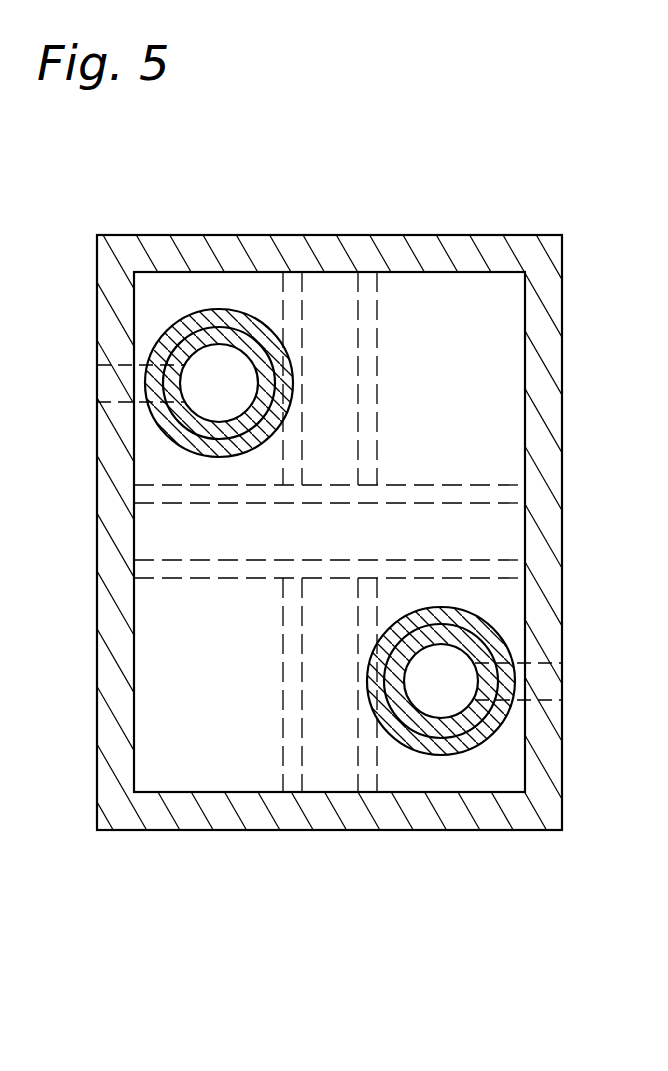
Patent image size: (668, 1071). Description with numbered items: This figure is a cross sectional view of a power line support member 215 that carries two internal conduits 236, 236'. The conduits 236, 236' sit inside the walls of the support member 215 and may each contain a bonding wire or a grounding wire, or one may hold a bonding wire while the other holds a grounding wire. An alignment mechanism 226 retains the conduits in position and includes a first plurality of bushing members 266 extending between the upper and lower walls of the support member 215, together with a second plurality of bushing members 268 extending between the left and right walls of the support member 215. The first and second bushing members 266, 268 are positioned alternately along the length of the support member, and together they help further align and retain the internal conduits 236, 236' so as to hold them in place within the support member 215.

The support member 215 is at (237, 860).
The alignment mechanism 226 is at (467, 470).
The internal conduit 236 is at (502, 667).
The internal conduit 236' is at (160, 329).
The first plurality of bushing members 266 is at (283, 307).
The second plurality of bushing members 268 is at (192, 578).